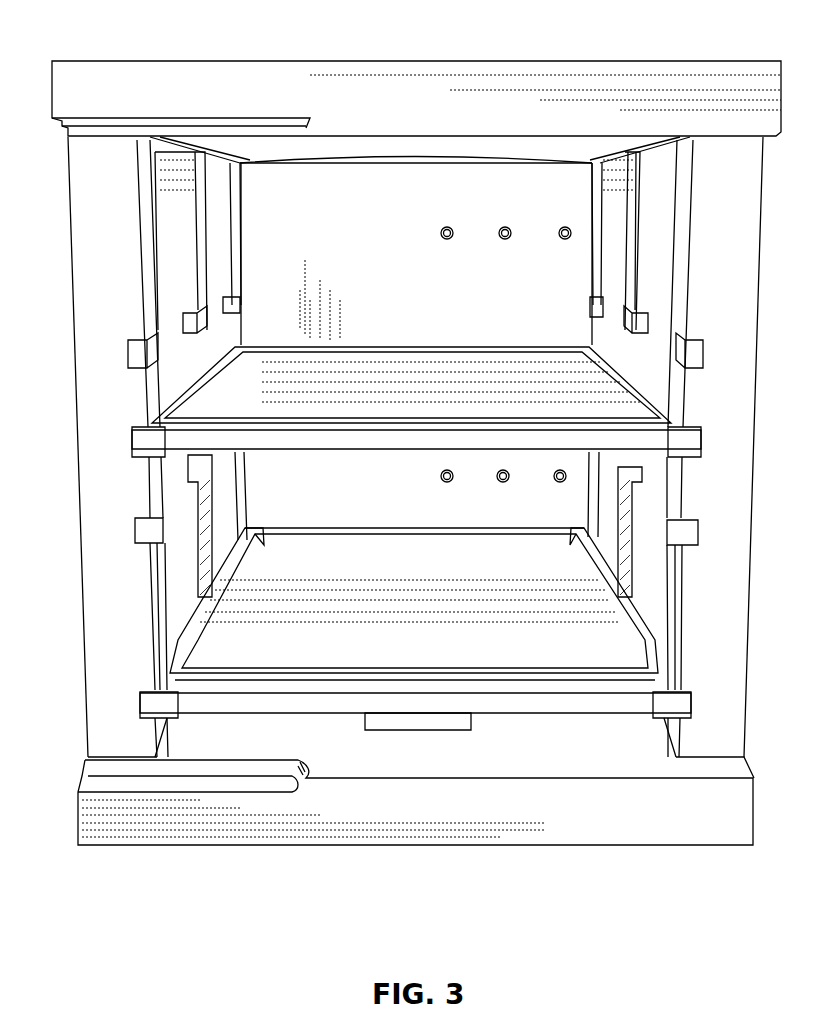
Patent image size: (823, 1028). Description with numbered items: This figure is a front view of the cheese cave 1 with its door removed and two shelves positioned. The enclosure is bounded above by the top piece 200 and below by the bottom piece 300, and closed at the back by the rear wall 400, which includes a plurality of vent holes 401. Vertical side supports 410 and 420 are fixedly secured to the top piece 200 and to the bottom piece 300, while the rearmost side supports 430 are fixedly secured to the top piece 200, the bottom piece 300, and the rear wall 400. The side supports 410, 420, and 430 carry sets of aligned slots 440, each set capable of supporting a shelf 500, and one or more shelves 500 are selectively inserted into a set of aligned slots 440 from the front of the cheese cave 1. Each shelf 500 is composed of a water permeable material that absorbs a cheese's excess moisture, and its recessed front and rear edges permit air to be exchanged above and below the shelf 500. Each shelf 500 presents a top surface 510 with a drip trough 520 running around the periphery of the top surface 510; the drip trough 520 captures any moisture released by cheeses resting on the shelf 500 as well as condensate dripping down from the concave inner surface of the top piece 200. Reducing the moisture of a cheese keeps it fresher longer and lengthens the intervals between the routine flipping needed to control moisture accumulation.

The cheese cave 1 is at (396, 386).
The top piece 200 is at (410, 90).
The bottom piece 300 is at (641, 812).
The rear wall 400 is at (563, 185).
The holes 401 is at (568, 250).
The side support 410 is at (703, 577).
The side support 420 is at (638, 503).
The rearmost side support 430 is at (616, 204).
The aligned slots 440 is at (142, 357).
The shelf 500 is at (265, 374).
The top surface 510 is at (414, 604).
The drip trough 520 is at (250, 673).